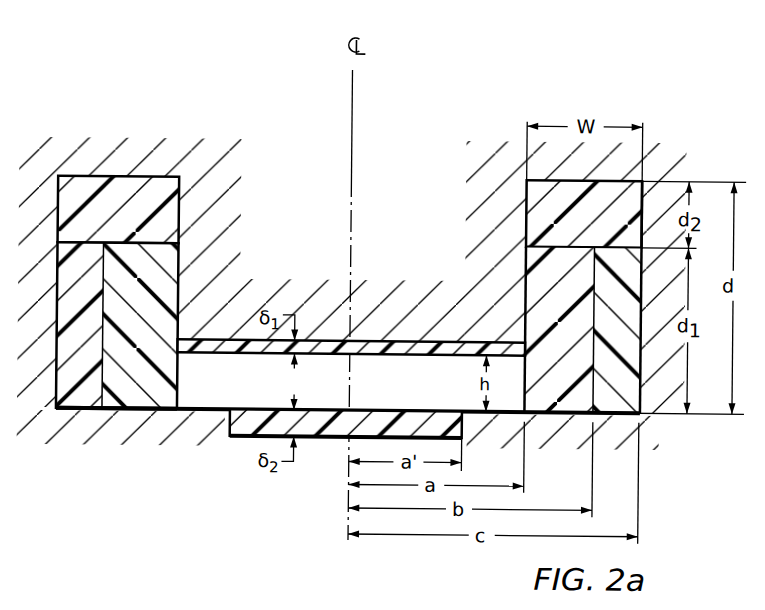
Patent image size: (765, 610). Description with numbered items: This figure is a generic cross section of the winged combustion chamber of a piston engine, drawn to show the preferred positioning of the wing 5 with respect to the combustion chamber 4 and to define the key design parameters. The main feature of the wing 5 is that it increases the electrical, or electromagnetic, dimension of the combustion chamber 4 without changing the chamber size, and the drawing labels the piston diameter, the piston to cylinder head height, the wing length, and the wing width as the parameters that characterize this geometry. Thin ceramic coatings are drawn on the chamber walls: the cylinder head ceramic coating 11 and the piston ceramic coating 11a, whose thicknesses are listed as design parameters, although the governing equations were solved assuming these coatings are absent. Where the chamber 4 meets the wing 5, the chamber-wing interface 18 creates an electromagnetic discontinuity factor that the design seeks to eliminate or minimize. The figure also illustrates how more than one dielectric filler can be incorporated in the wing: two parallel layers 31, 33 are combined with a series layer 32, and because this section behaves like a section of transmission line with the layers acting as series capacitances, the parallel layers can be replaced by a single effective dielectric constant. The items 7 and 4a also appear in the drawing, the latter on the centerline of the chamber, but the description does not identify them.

The combustion chamber 4 is at (400, 392).
The center plane of channel 4a is at (362, 289).
The wing 5 is at (180, 229).
The left conductor upper portion 7 is at (110, 178).
The cylinder head ceramic coating 11 is at (246, 425).
The piston ceramic coating 11a is at (378, 346).
The chamber-wing interface 18 is at (174, 399).
The parallel dielectric filler layer 31 is at (566, 297).
The series dielectric filler layer 32 is at (557, 228).
The parallel dielectric filler layer 33 is at (630, 391).